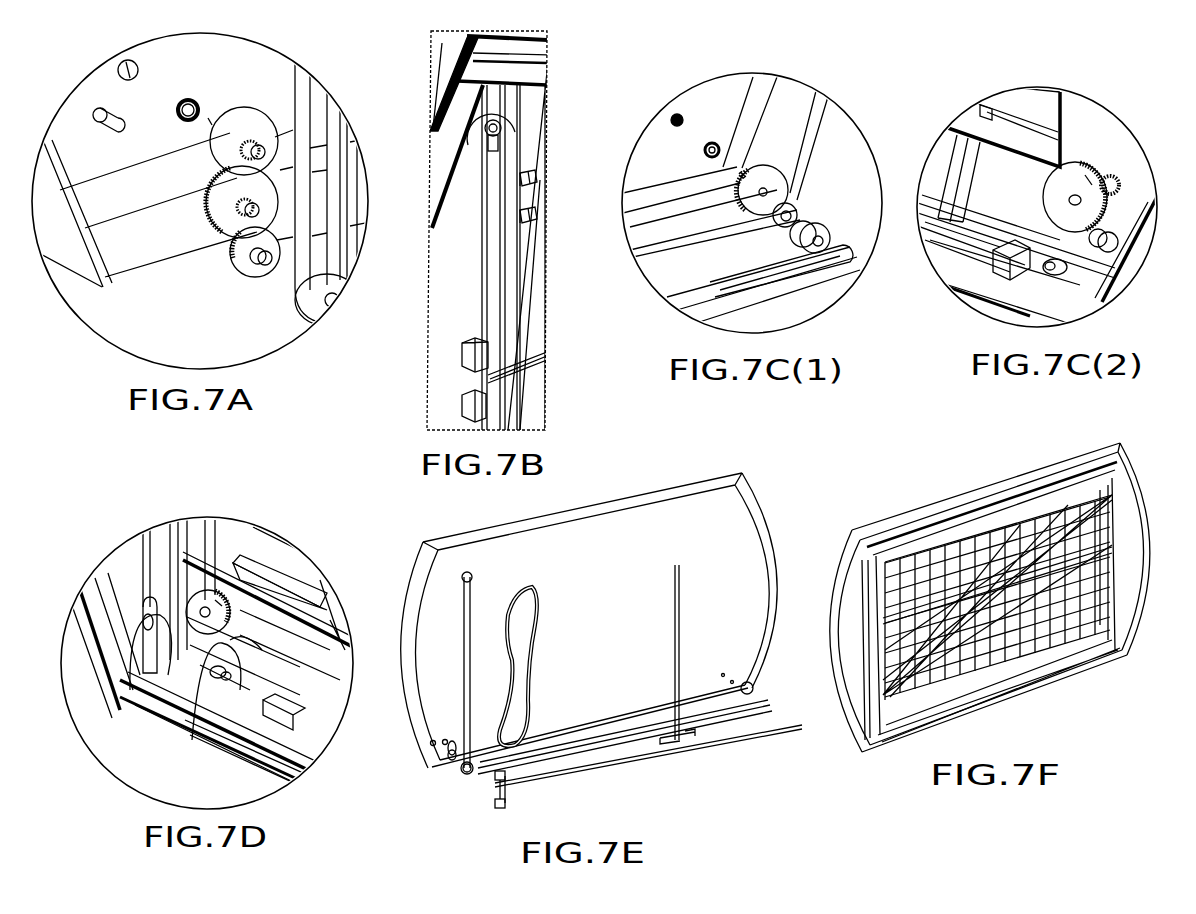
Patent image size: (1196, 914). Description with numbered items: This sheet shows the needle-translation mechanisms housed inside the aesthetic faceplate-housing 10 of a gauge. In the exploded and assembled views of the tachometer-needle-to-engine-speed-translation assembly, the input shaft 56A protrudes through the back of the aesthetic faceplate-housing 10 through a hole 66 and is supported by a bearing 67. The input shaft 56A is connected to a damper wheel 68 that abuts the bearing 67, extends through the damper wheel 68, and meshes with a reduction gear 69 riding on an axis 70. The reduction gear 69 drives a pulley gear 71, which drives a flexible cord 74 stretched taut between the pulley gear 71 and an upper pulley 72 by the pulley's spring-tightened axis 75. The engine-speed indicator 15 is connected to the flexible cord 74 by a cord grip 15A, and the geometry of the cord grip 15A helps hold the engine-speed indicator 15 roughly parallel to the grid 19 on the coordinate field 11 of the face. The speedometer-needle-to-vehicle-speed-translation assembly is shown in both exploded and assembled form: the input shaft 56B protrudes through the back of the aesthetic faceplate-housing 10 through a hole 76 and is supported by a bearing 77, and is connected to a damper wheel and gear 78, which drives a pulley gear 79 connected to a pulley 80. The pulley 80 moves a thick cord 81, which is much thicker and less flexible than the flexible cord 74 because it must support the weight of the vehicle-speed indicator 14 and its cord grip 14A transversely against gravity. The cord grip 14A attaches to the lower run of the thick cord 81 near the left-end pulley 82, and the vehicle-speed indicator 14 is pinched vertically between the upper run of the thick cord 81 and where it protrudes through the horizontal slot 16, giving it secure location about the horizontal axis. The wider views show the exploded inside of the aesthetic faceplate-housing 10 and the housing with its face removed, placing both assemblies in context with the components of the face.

In FIG. 7A, the aesthetic faceplate-housing 10 is at (123, 235).
In FIG. 7B, the aesthetic faceplate-housing 10 is at (440, 78).
In FIG. 7C-1, the aesthetic faceplate-housing 10 is at (808, 97).
In FIG. 7C2, the aesthetic faceplate-housing 10 is at (1130, 282).
In FIG. 7D, the aesthetic faceplate-housing 10 is at (105, 618).
In FIG. 7E, the aesthetic faceplate-housing 10 is at (613, 561).
In FIG. 7F, the aesthetic faceplate-housing 10 is at (895, 520).
In FIG. 7F, the shared coordinate field 11 is at (1085, 575).
In FIG. 7C2, the vehicle-speed indicator 14 is at (945, 158).
In FIG. 7D, the vehicle-speed indicator 14 is at (330, 640).
In FIG. 7E, the vehicle-speed indicator 14 is at (685, 690).
In FIG. 7C2, the cord grip 14A is at (1000, 268).
In FIG. 7D, the cord grip 14A is at (275, 740).
In FIG. 7E, the cord grip 14A is at (690, 740).
In FIG. 7B, the engine-speed indicator 15 is at (520, 370).
In FIG. 7E, the engine-speed indicator 15 is at (578, 775).
In FIG. 7B, the cord grip 15A is at (488, 345).
In FIG. 7E, the cord grip 15A is at (500, 810).
In FIG. 7C2, the horizontal slot 16 is at (1012, 128).
In FIG. 7D, the horizontal slot 16 is at (300, 590).
In FIG. 7F, the grid 19 is at (1100, 590).
In FIG. 7A, the input shaft 56A is at (212, 118).
In FIG. 7D, the input shaft 56A is at (220, 600).
In FIG. 7C-1, the input shaft 56B is at (740, 175).
In FIG. 7C2, the input shaft 56B is at (1120, 185).
In FIG. 7A, the hole 66 is at (133, 62).
In FIG. 7E, the hole 66 is at (430, 735).
In FIG. 7A, the bearing 67 is at (188, 96).
In FIG. 7A, the damper wheel 68 is at (212, 140).
In FIG. 7D, the damper wheel 68 is at (232, 615).
In FIG. 7A, the reduction gear 69 is at (218, 220).
In FIG. 7D, the reduction gear 69 is at (255, 662).
In FIG. 7A, the axis 70 is at (118, 108).
In FIG. 7A, the pulley gear 71 is at (290, 300).
In FIG. 7D, the pulley gear 71 is at (165, 670).
In FIG. 7E, the pulley gear 71 is at (467, 778).
In FIG. 7B, the pulley 72 is at (503, 126).
In FIG. 7E, the pulley 72 is at (470, 570).
In FIG. 7A, the flexible cord 74 is at (298, 100).
In FIG. 7B, the flexible cord 74 is at (515, 265).
In FIG. 7D, the flexible cord 74 is at (130, 700).
In FIG. 7E, the flexible cord 74 is at (480, 585).
In FIG. 7B, the spring-tightened axis 75 is at (538, 178).
In FIG. 7C-1, the hole 76 is at (685, 116).
In FIG. 7C-1, the bearing 77 is at (718, 142).
In FIG. 7C2, the bearing 77 is at (1105, 175).
In FIG. 7C-1, the damper wheel and gear 78 is at (775, 180).
In FIG. 7C2, the damper wheel and gear 78 is at (1095, 165).
In FIG. 7C-1, the pulley gear 79 is at (795, 205).
In FIG. 7C2, the pulley gear 79 is at (1118, 235).
In FIG. 7C-1, the pulley 80 is at (810, 222).
In FIG. 7C2, the pulley 80 is at (1065, 280).
In FIG. 7C-1, the thick cord 81 is at (775, 275).
In FIG. 7C2, the thick cord 81 is at (995, 225).
In FIG. 7D, the thick cord 81 is at (200, 735).
In FIG. 7D, the left-end pulley 82 is at (200, 730).